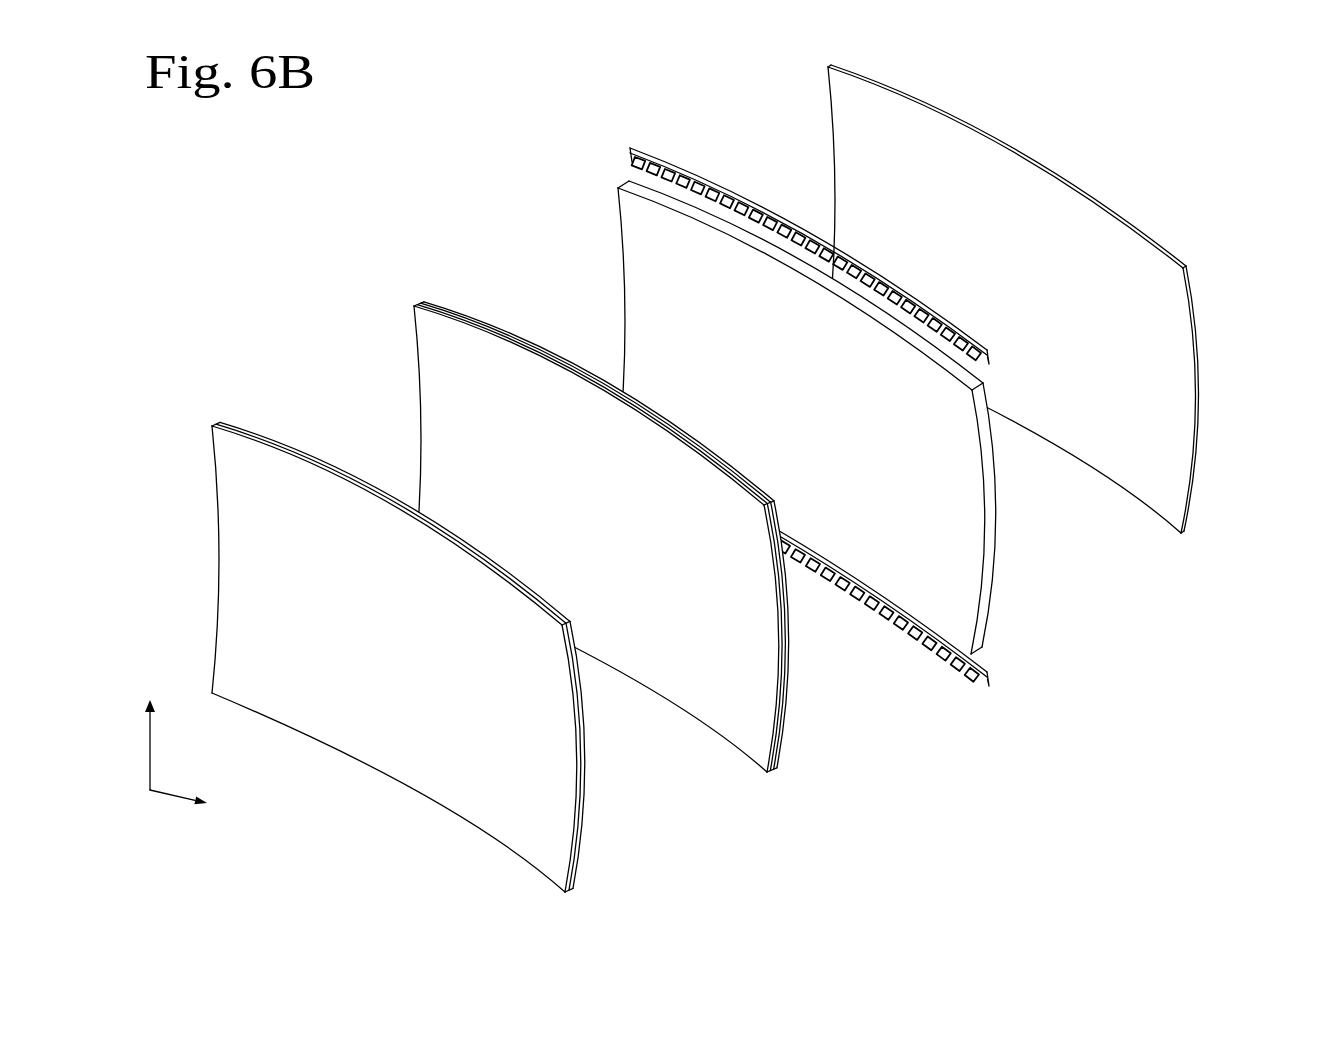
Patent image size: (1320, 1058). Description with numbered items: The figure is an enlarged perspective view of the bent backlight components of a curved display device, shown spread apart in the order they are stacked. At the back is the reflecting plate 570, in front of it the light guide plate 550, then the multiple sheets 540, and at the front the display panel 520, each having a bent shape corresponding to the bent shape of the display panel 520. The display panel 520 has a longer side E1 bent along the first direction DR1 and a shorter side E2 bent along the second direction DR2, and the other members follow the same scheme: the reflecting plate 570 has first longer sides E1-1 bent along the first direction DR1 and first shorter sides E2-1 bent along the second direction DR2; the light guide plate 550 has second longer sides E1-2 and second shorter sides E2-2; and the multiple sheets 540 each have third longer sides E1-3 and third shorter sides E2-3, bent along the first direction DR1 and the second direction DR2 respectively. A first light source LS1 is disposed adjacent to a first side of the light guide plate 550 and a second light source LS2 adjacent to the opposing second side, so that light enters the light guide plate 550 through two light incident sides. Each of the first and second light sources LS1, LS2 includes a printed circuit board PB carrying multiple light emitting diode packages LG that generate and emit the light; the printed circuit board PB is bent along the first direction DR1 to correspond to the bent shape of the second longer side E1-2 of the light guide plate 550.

The display panel 520 is at (396, 626).
The multiple sheets 540 is at (599, 509).
The light guide plate 550 is at (805, 424).
The reflecting plate 570 is at (1012, 322).
The first light source LS1 is at (857, 615).
The second light source LS2 is at (809, 225).
The printed circuit board PB is at (655, 148).
The light emitting diode packages LG is at (683, 168).
The longer side E1 is at (323, 468).
The shorter side E2 is at (212, 545).
The first longer sides E1-1 is at (953, 118).
The first shorter sides E2-1 is at (828, 93).
The second longer sides E1-2 is at (643, 188).
The second shorter sides E2-2 is at (618, 228).
The third longer sides E1-3 is at (522, 347).
The third shorter sides E2-3 is at (414, 362).
The first direction DR1 is at (201, 806).
The second direction DR2 is at (150, 729).